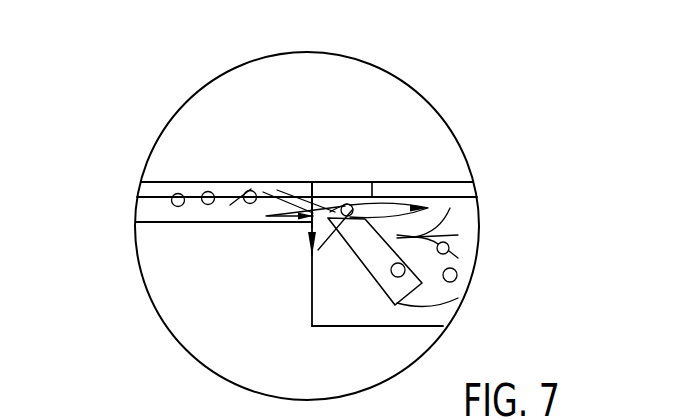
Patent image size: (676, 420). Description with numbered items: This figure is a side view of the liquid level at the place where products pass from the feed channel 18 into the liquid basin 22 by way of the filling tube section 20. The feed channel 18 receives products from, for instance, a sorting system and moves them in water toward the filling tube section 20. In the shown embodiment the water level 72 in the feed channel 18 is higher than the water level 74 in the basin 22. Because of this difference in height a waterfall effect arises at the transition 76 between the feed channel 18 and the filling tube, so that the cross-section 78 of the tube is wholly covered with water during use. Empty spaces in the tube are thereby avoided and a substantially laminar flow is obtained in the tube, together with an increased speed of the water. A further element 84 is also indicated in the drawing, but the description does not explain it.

The feed channel 18 is at (236, 150).
The filling tube section 20 is at (364, 150).
The liquid basin 22 is at (434, 152).
The water level 72 is at (156, 192).
The water level 74 is at (448, 198).
The transition 76 is at (316, 152).
The cross-section 78 is at (311, 282).
The conveyor 84 is at (132, 419).